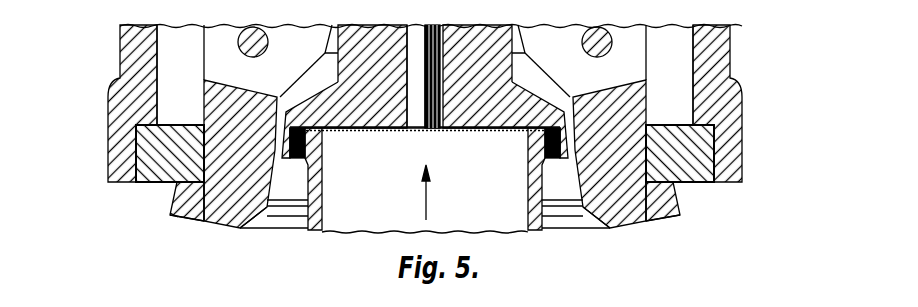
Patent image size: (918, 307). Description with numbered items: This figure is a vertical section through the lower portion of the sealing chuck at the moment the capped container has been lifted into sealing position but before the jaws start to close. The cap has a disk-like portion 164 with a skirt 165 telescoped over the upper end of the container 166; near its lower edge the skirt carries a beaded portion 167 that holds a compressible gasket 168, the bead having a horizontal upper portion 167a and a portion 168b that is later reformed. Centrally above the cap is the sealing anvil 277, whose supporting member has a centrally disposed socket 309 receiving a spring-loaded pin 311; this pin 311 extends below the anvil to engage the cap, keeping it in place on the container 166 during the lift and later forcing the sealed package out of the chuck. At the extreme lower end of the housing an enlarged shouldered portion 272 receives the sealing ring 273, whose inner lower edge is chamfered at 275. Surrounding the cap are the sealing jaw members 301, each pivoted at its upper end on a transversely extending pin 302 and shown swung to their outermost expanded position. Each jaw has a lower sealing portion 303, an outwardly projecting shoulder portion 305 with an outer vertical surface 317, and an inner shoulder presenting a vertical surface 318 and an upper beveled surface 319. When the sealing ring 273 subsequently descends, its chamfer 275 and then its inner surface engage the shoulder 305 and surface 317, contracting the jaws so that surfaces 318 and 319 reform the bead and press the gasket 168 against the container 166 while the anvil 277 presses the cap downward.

The transversely extending pin 302 is at (238, 43).
The enlarged shouldered portion 272 is at (122, 140).
The sealing ring 273 is at (170, 158).
The lower sealing portions 303 is at (619, 225).
The outwardly projecting shoulder portion 305 is at (187, 193).
The outer vertical surface 317 is at (172, 207).
The sealing jaw members 301 is at (183, 219).
The chamfered inner lower edge 275 is at (202, 222).
The vertical surface 318 is at (270, 213).
The skirt 165 is at (505, 100).
The beaded portion 167 is at (565, 135).
The horizontal upper portion of the bead 167a is at (282, 97).
The container 166 is at (322, 184).
The upper beveled surface 319 is at (300, 205).
The compressible gasket 168 is at (322, 152).
The seal lip 168b is at (292, 148).
The disk-like portion 164 is at (463, 129).
The sealing anvil 277 is at (503, 129).
The centrally disposed socket 309 is at (440, 63).
The pin 311 is at (440, 38).